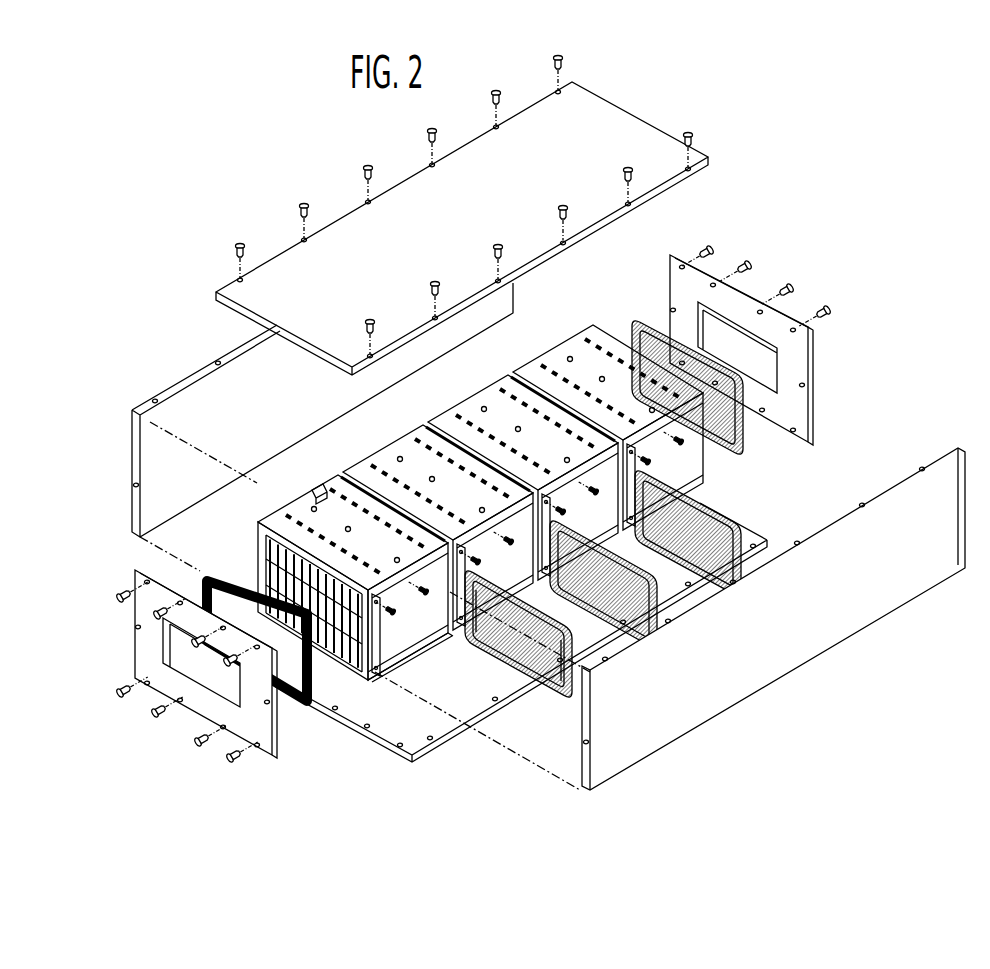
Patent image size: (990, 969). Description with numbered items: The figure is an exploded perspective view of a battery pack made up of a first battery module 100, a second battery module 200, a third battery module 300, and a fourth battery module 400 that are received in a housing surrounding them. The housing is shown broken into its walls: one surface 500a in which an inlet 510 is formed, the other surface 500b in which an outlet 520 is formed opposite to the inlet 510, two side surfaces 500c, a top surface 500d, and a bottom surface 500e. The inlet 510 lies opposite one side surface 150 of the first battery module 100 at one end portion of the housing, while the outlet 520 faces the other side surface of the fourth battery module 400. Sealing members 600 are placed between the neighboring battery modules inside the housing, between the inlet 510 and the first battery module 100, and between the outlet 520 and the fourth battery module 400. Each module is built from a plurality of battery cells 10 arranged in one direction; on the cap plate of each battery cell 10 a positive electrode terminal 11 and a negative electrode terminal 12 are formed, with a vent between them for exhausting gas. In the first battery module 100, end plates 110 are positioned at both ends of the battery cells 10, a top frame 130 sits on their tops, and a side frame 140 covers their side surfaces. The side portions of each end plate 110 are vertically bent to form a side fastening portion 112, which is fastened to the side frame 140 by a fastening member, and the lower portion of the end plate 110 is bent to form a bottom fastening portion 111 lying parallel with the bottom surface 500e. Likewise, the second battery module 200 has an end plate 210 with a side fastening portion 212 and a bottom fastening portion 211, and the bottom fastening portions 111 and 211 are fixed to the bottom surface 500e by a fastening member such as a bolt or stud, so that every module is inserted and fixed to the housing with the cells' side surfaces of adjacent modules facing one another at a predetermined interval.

The battery cell 10 is at (347, 670).
The positive electrode terminal 11 is at (318, 488).
The negative electrode terminal 12 is at (428, 530).
The first battery module 100 is at (345, 601).
The end plate 110 is at (398, 651).
The bottom fastening portion 111 is at (448, 643).
The side fastening portion 112 is at (473, 562).
The top frame 130 is at (283, 511).
The side frame 140 is at (258, 575).
The side surface 150 is at (335, 659).
The second battery module 200 is at (438, 527).
The end plate 210 is at (519, 640).
The bottom fastening portion 211 is at (495, 632).
The side fastening portion 212 is at (512, 571).
The third battery module 300 is at (523, 477).
The fourth battery module 400 is at (608, 427).
The one surface of the housing 500a is at (197, 666).
The other surface of the housing 500b is at (754, 341).
The side surface of the housing 500c is at (190, 395).
The top surface of the housing 500d is at (626, 133).
The bottom surface of the housing 500e is at (400, 722).
The inlet 510 is at (212, 674).
The outlet 520 is at (755, 358).
The sealing member 600 is at (291, 712).